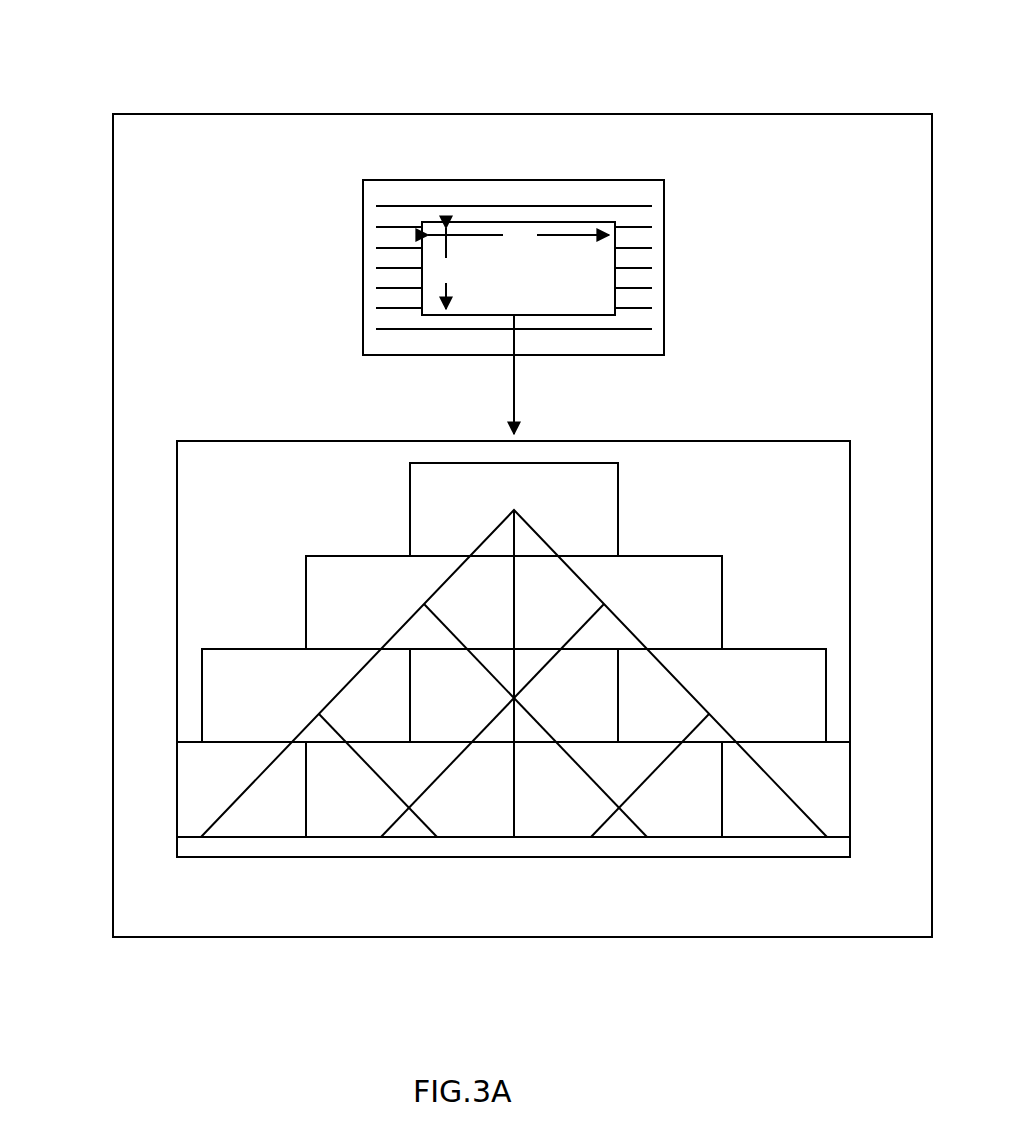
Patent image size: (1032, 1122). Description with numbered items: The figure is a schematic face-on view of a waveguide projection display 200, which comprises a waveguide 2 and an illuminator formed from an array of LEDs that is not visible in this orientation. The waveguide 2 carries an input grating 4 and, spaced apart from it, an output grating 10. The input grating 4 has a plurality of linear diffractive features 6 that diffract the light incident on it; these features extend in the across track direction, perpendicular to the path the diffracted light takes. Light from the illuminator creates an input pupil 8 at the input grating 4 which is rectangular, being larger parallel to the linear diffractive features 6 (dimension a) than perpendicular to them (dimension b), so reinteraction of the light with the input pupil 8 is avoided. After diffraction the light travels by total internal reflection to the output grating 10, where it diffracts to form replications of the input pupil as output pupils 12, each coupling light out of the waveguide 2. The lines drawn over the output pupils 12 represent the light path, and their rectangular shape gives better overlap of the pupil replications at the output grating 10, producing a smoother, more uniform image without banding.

The waveguide projection display 200 is at (156, 96).
The waveguide 2 is at (113, 232).
The input grating 4 is at (534, 211).
The linear diffractive features 6 is at (643, 308).
The input pupil 8 is at (573, 222).
The output grating 10 is at (513, 599).
The output pupils 12 is at (618, 503).